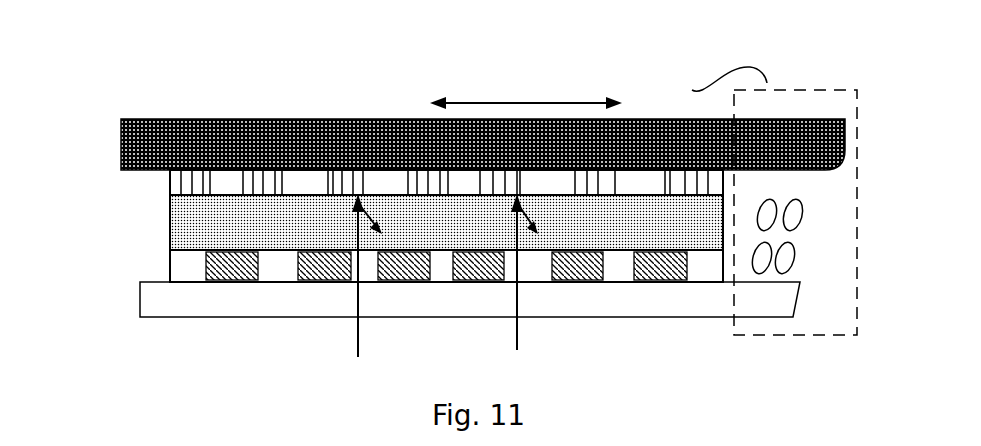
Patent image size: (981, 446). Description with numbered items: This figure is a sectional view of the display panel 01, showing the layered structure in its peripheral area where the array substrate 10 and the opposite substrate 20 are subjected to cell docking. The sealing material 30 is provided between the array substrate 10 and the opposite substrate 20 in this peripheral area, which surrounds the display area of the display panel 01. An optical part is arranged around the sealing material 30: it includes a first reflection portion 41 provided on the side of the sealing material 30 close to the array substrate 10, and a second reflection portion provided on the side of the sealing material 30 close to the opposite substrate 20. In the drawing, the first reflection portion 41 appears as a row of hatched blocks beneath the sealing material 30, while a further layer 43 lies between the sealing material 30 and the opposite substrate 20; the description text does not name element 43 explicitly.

The display panel 01 is at (148, 104).
The opposite substrate 20 is at (812, 148).
The electrode layer 43 is at (170, 193).
The sealing material 30 is at (170, 232).
The first reflection portion 41 is at (170, 270).
The array substrate 10 is at (768, 292).